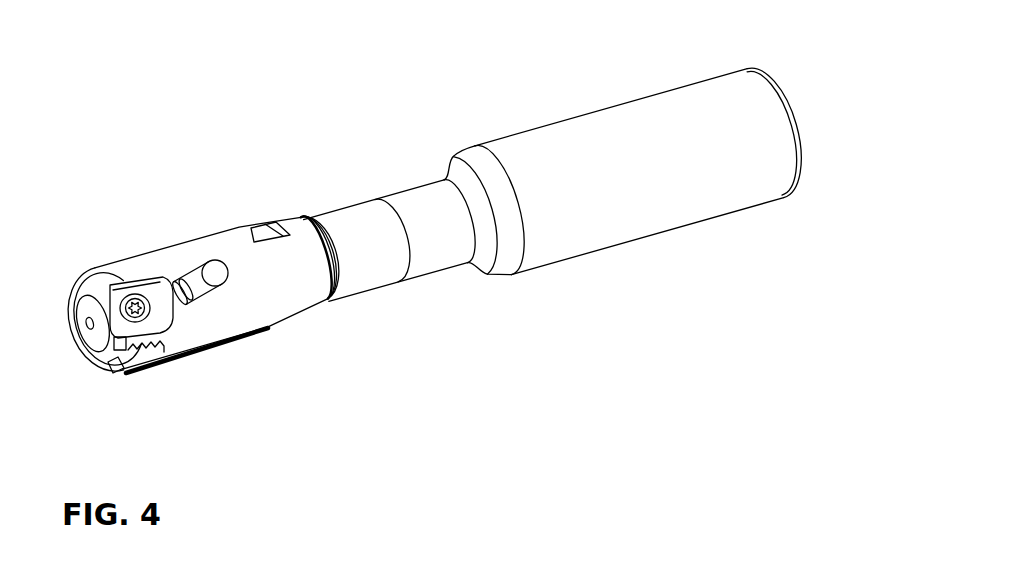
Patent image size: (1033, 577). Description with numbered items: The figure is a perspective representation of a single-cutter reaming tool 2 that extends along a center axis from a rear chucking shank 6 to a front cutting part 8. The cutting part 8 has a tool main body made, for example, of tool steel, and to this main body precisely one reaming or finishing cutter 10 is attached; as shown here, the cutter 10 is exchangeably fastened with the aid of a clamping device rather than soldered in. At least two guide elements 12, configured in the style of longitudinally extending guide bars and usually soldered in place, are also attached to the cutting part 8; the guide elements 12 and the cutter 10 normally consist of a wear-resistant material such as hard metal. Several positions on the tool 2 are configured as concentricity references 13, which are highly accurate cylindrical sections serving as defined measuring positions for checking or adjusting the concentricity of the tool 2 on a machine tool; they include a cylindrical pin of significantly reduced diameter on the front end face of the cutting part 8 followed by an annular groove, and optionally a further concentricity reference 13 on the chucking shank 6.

The single-cutter reaming tool 2 is at (318, 135).
The chucking shank 6 is at (667, 210).
The cutting part 8 is at (293, 303).
The reaming or finishing cutter 10 is at (153, 336).
The guide elements 12 is at (175, 355).
The concentricity references 13 is at (332, 197).